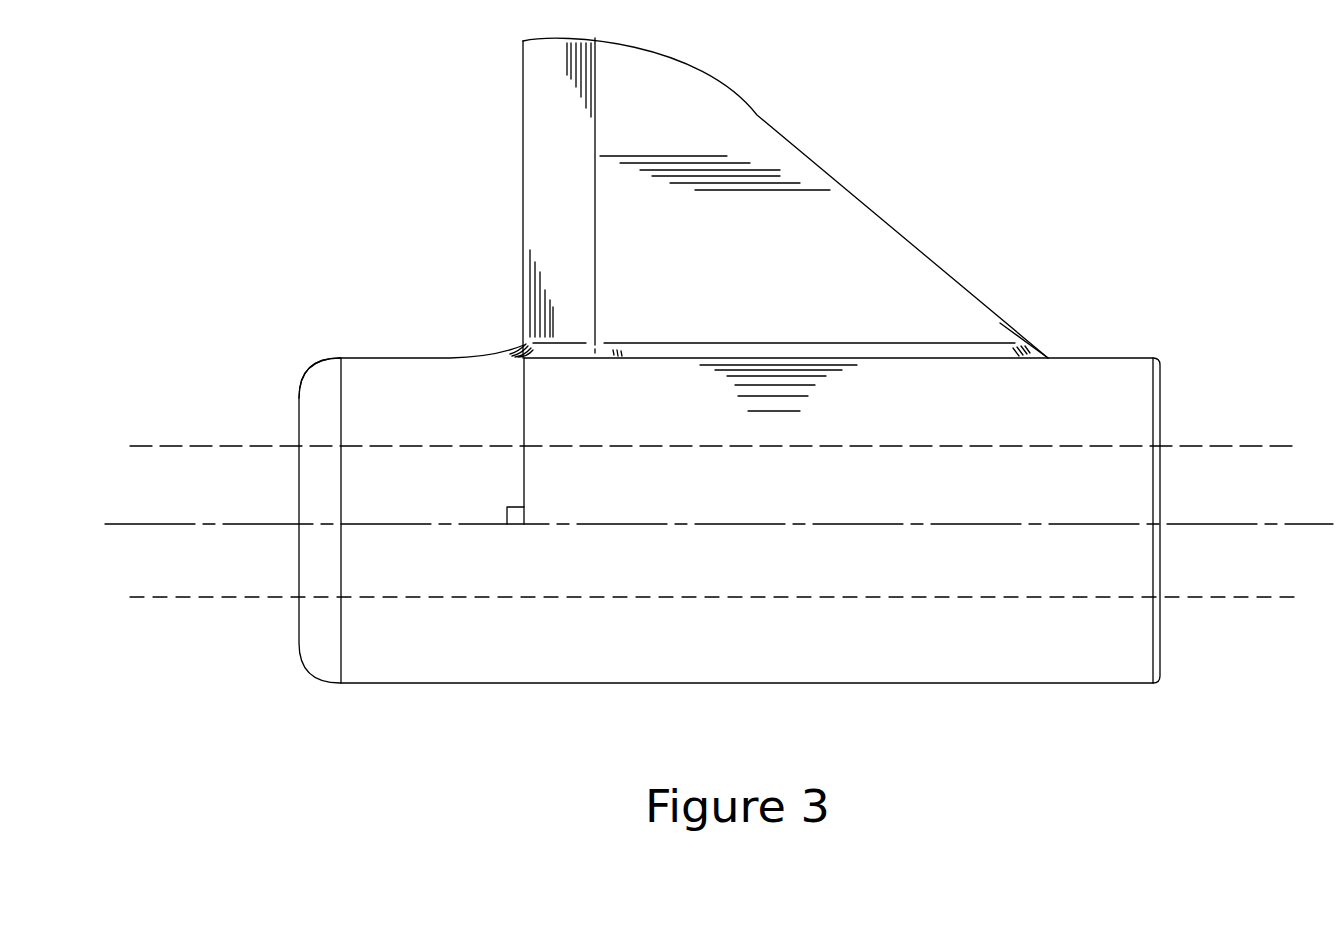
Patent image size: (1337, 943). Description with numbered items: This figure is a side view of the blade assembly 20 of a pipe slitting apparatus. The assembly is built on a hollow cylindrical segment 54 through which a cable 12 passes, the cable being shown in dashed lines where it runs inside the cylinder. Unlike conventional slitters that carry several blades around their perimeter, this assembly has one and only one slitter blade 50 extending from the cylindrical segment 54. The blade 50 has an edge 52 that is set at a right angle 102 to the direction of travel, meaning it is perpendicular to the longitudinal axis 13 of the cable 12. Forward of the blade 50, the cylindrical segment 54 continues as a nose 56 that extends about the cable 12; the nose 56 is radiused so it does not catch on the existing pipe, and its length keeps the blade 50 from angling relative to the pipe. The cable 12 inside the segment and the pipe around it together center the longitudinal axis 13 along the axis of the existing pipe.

The cable 12 is at (1204, 446).
The longitudinal axis 13 is at (253, 524).
The blade assembly 20 is at (562, 656).
The slitter blade 50 is at (745, 128).
The edge 52 is at (523, 123).
The cylindrical segment 54 is at (1058, 400).
The nose 56 is at (313, 368).
The right angle 102 is at (507, 507).